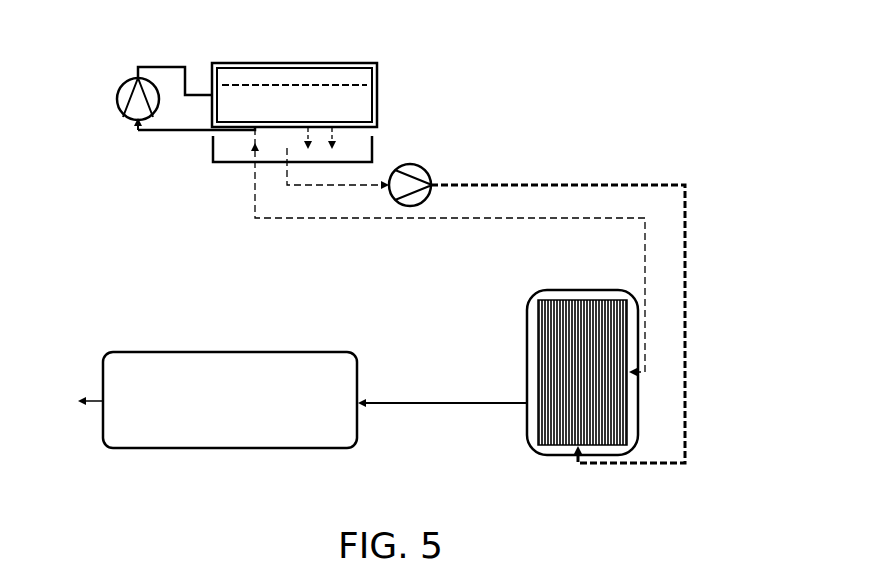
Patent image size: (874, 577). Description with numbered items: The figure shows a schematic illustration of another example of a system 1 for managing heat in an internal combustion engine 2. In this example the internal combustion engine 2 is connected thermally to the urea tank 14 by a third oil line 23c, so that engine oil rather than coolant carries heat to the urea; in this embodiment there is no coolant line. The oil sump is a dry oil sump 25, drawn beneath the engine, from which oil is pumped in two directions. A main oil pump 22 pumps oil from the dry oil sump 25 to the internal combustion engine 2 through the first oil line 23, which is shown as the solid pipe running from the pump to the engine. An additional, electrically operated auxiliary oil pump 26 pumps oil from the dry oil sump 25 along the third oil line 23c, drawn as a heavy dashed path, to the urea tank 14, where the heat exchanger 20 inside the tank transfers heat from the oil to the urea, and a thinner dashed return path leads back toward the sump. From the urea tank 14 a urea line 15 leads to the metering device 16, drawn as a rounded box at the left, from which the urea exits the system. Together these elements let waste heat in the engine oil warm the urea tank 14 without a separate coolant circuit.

The system 1 is at (716, 140).
The internal combustion engine 2 is at (378, 93).
The urea tank 14 is at (597, 374).
The urea line 15 is at (403, 403).
The metering device 16 is at (230, 440).
The heat exchanger 20 is at (540, 420).
The main oil pump 22 is at (118, 85).
The first oil line 23 is at (165, 132).
The third oil line 23c is at (605, 185).
The dry oil sump 25 is at (232, 152).
The auxiliary oil pump 26 is at (427, 170).